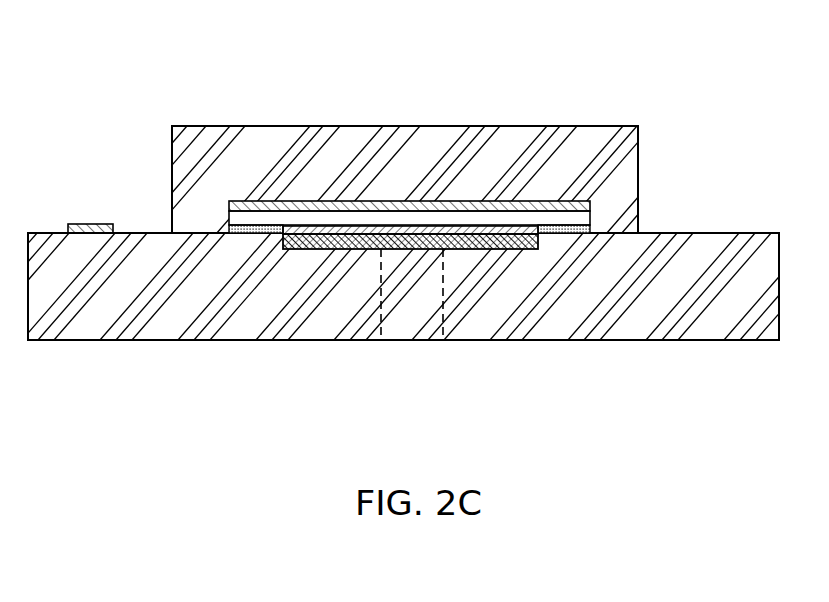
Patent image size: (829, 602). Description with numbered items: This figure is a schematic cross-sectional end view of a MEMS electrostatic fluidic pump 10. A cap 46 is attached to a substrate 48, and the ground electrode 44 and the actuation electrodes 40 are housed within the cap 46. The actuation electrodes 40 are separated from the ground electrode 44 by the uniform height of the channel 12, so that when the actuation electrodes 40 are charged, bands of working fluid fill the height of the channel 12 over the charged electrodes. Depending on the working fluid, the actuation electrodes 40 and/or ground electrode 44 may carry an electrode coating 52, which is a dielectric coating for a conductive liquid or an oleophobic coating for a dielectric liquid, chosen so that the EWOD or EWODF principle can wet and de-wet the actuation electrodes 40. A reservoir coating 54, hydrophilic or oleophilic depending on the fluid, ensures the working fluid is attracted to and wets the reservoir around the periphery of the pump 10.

The pump 10 is at (607, 43).
The channel 12 is at (463, 218).
The actuation electrodes 40 is at (317, 245).
The ground electrode 44 is at (560, 207).
The cap 46 is at (613, 187).
The substrate 48 is at (664, 308).
The electrode coating 52 is at (297, 230).
The reservoir coating 54 is at (245, 230).